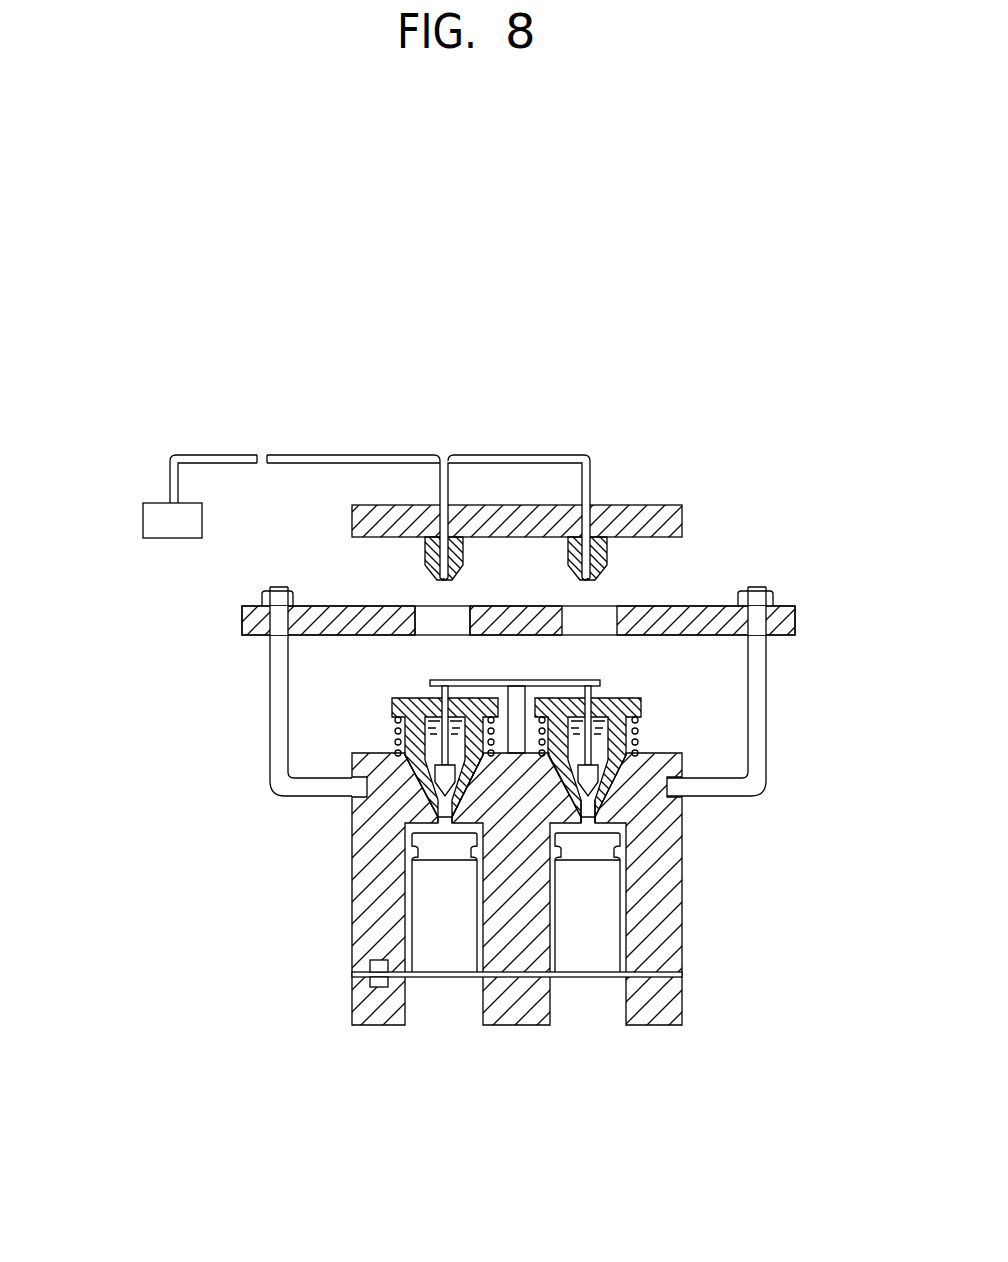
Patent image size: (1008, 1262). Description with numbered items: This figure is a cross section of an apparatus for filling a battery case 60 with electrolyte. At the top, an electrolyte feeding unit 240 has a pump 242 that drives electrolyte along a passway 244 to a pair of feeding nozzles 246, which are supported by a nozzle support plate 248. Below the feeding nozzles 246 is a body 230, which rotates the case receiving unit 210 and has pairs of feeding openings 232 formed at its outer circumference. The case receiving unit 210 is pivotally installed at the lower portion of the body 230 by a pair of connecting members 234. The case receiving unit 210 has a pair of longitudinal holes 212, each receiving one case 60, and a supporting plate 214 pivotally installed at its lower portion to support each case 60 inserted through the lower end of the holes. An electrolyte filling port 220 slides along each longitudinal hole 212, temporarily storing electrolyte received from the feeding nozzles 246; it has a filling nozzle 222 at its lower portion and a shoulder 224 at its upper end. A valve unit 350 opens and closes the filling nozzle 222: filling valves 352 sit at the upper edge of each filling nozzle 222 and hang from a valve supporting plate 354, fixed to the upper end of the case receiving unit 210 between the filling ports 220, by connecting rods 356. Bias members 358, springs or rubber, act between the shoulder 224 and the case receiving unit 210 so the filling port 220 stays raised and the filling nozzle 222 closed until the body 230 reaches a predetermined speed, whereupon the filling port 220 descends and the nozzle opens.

The battery case 60 is at (423, 913).
The case receiving unit 210 is at (563, 936).
The longitudinal holes 212 is at (596, 808).
The supporting plate 214 is at (588, 978).
The electrolyte filling port 220 is at (682, 760).
The filling nozzle 222 is at (597, 823).
The shoulder 224 is at (643, 713).
The body 230 is at (792, 622).
The feeding openings 232 is at (440, 618).
The connecting members 234 is at (268, 765).
The electrolyte feeding unit 240 is at (153, 488).
The pump 242 is at (143, 521).
The passway 244 is at (525, 453).
The feeding nozzles 246 is at (607, 553).
The nozzle support plate 248 is at (655, 503).
The valve unit 350 is at (416, 676).
The filling valves 352 is at (418, 780).
The valve supporting plate 354 is at (600, 687).
The connecting rods 356 is at (430, 693).
The bias members 358 is at (394, 730).